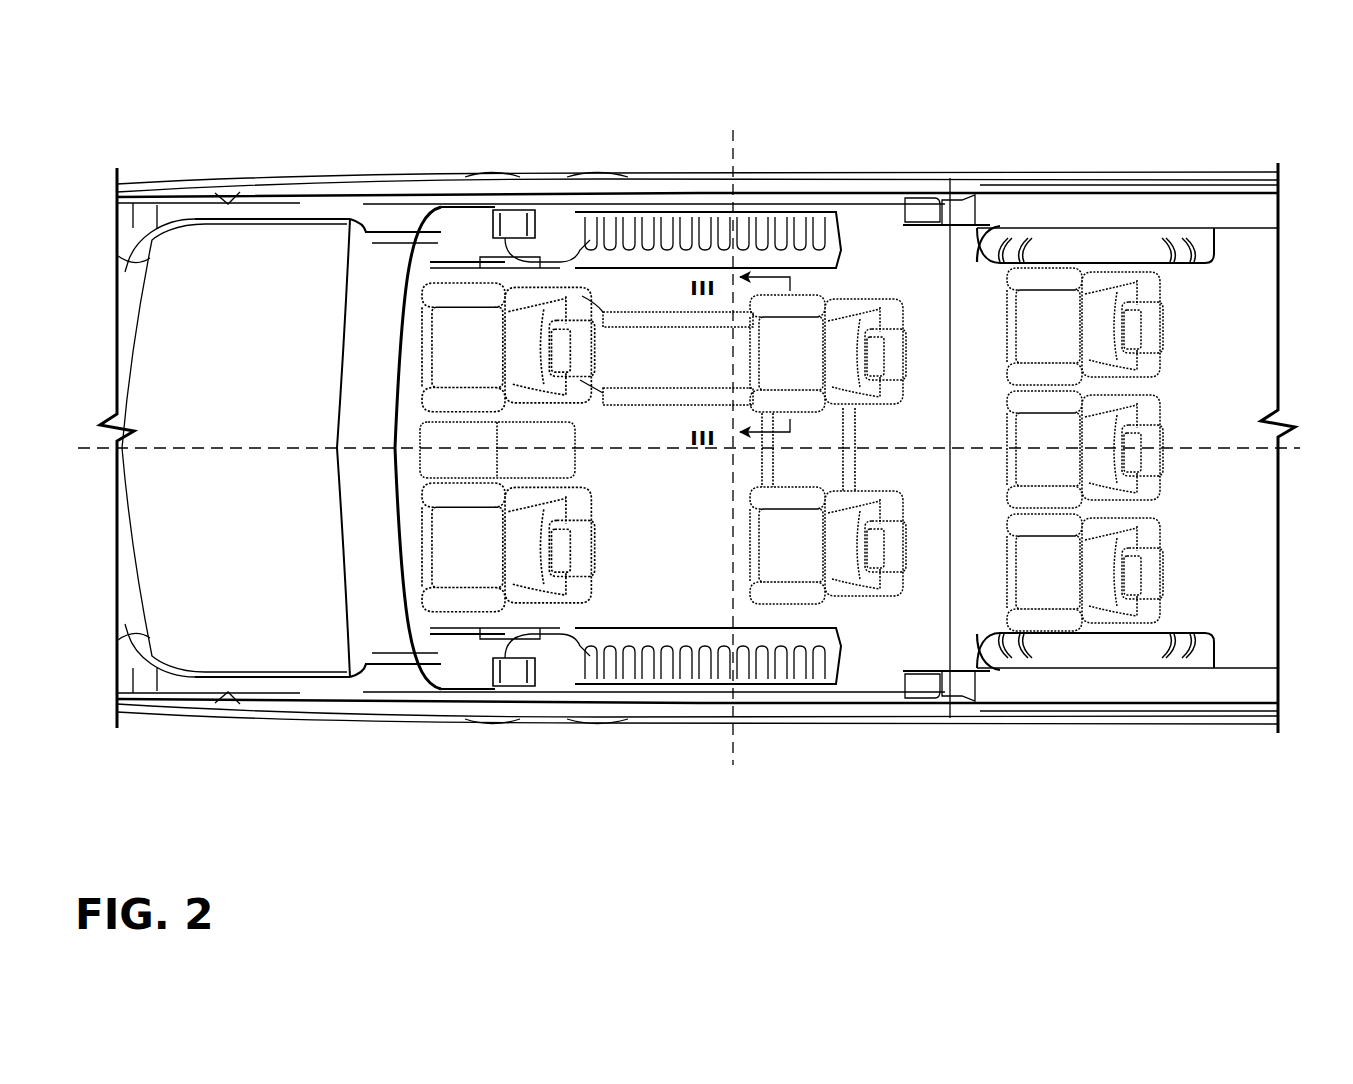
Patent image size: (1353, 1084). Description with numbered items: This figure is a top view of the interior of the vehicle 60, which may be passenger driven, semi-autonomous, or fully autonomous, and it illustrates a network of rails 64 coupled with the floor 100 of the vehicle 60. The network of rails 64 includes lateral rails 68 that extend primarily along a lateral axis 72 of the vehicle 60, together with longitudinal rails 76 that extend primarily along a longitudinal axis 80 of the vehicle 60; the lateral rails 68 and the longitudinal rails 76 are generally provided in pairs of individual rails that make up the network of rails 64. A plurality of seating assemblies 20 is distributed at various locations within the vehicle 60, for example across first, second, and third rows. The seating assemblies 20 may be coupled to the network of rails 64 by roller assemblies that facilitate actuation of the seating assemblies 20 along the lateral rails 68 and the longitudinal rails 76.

The seating assemblies 20 is at (866, 298).
The vehicle 60 is at (323, 162).
The network of rails 64 is at (756, 461).
The lateral rails 68 is at (850, 480).
The lateral axis 72 is at (740, 163).
The longitudinal rails 76 is at (603, 398).
The longitudinal axis 80 is at (1290, 448).
The floor 100 is at (683, 597).